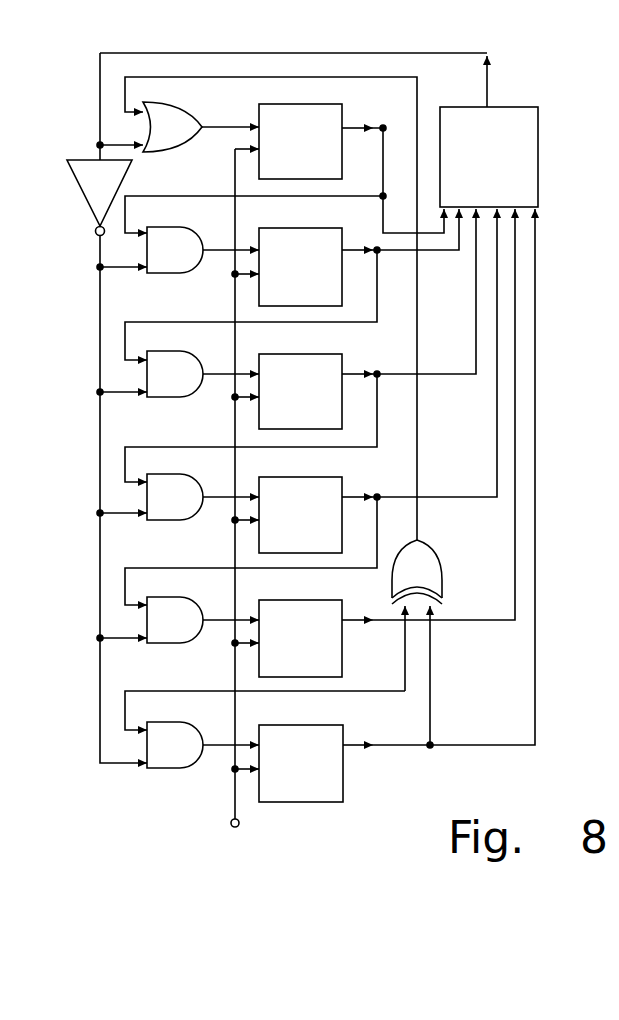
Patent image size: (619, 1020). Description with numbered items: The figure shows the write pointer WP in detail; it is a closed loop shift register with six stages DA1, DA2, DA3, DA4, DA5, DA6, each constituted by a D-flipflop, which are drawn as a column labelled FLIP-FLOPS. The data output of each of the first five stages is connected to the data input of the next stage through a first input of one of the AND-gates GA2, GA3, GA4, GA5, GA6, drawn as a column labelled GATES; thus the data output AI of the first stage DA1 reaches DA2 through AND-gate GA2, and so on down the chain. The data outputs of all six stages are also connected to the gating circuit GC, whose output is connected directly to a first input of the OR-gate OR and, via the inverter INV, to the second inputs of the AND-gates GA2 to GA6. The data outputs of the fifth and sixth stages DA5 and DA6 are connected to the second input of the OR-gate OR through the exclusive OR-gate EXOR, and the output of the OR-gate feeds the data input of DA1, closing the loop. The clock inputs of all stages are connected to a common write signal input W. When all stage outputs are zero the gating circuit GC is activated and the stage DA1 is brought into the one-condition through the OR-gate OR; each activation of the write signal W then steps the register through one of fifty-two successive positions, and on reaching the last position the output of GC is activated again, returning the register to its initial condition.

The inverter INV is at (122, 198).
The OR-gate OR is at (258, 308).
The write signal input W is at (253, 493).
The write pointer WP is at (136, 843).
The data output A1 AI is at (406, 162).
The AND-gate GA2 is at (241, 234).
The AND-gate GA3 is at (238, 323).
The AND-gate GA4 is at (238, 447).
The AND-gate GA5 is at (238, 570).
The AND-gate GA6 is at (265, 729).
The D-flipflop stage DA1 is at (316, 141).
The D-flipflop stage DA2 is at (359, 257).
The D-flipflop stage DA3 is at (367, 319).
The D-flipflop stage DA4 is at (378, 381).
The D-flipflop stage DA5 is at (387, 443).
The D-flipflop stage DA6 is at (397, 505).
The exclusive OR-gate EXOR is at (440, 633).
The gating circuit GC is at (489, 157).
The gates GATES is at (178, 820).
The flipflops FLIP-FLOPS is at (328, 824).